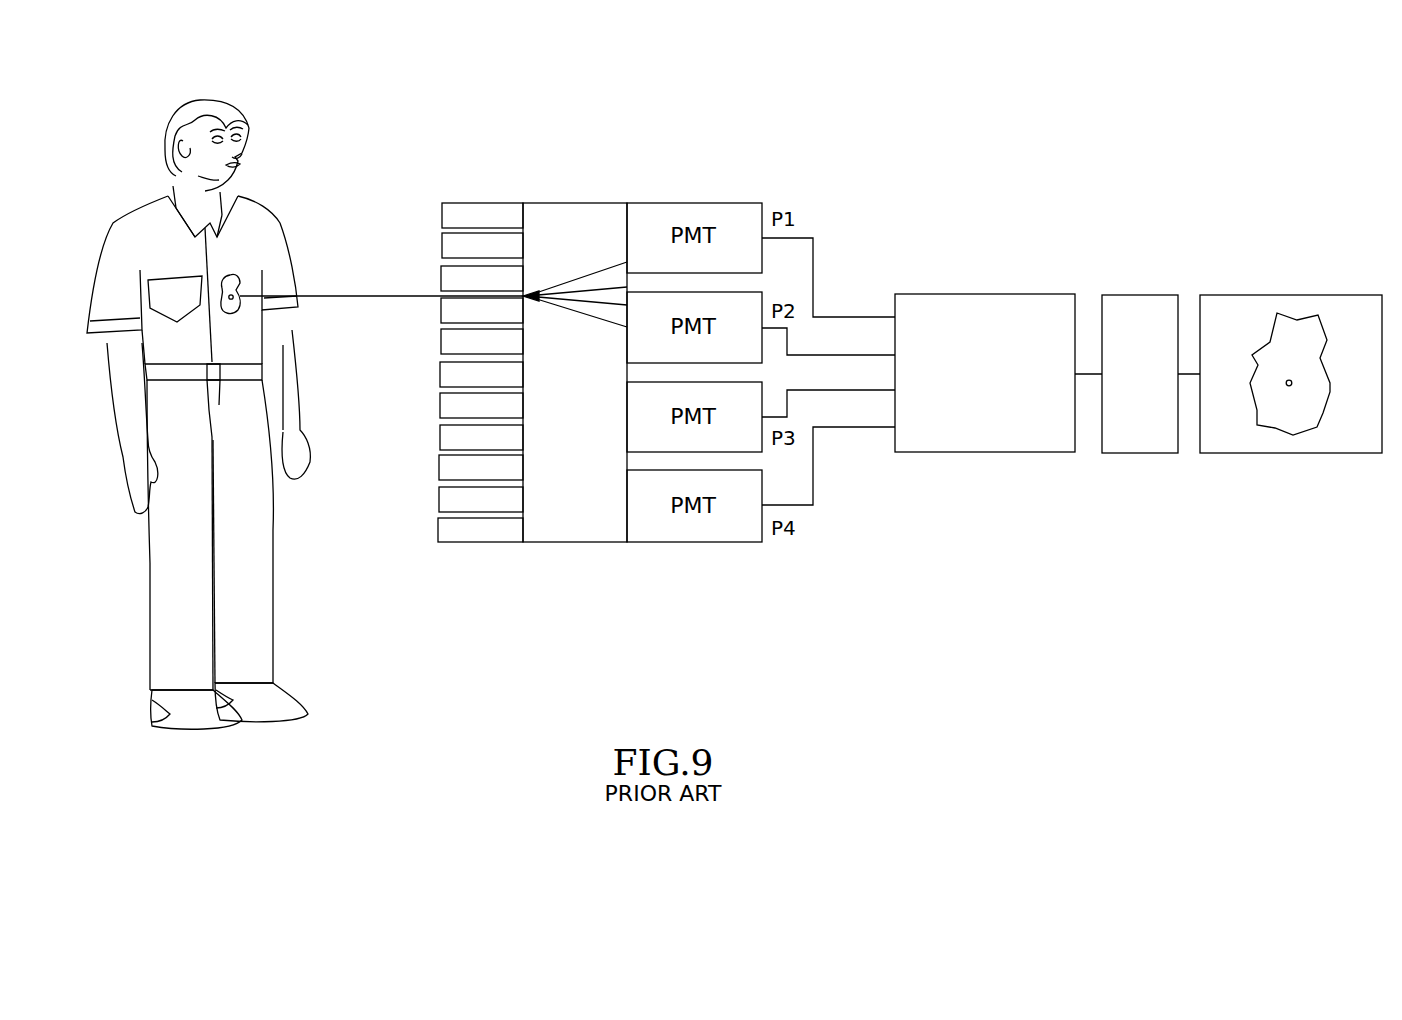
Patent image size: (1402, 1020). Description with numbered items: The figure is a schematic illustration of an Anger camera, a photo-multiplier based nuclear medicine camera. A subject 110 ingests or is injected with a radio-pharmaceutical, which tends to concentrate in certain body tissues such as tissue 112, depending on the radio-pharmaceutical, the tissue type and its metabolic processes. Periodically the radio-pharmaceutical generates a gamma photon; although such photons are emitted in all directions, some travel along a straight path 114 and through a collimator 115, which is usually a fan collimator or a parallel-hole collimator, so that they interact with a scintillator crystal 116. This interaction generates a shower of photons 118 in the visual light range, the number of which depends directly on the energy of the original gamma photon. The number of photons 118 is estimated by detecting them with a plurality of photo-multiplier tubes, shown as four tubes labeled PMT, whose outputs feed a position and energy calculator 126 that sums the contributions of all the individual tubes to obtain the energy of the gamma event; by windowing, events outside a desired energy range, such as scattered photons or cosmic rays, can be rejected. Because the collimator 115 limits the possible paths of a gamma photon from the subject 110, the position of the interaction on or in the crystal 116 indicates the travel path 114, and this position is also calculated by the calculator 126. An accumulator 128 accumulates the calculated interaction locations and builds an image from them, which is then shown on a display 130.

The subject 110 is at (342, 127).
The tissue 112 is at (236, 289).
The straight path 114 is at (372, 295).
The collimator 115 is at (472, 543).
The scintillator crystal 116 is at (555, 213).
The photons 118 is at (592, 270).
The position and energy calculator 126 is at (987, 294).
The accumulator 128 is at (1145, 295).
The display 130 is at (1292, 295).